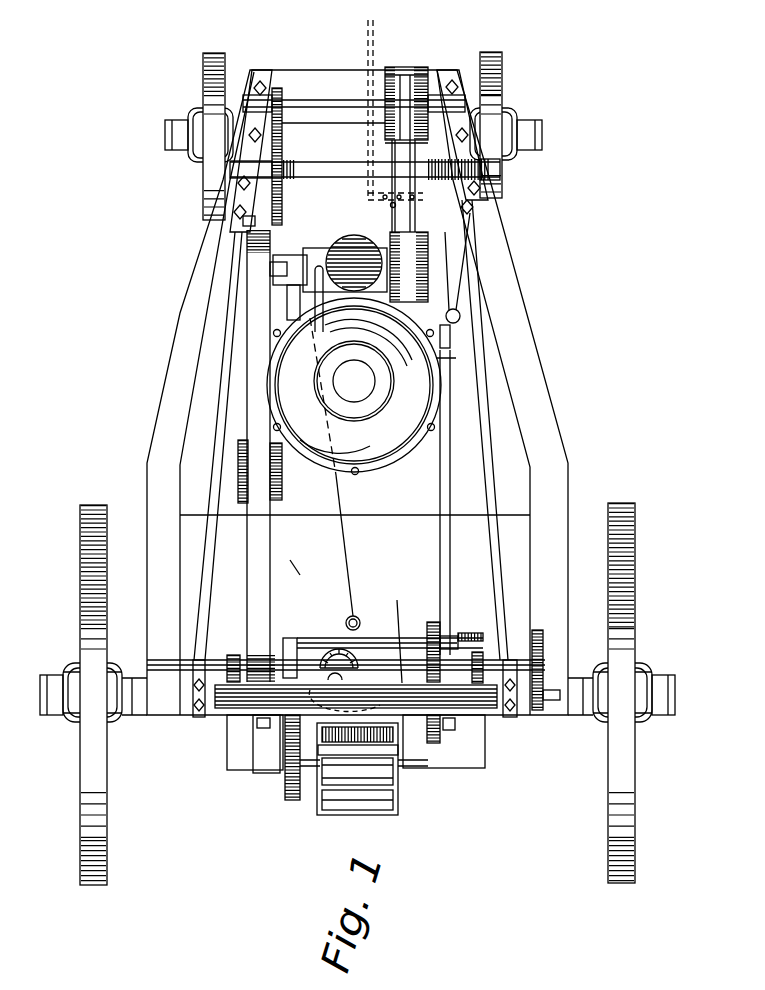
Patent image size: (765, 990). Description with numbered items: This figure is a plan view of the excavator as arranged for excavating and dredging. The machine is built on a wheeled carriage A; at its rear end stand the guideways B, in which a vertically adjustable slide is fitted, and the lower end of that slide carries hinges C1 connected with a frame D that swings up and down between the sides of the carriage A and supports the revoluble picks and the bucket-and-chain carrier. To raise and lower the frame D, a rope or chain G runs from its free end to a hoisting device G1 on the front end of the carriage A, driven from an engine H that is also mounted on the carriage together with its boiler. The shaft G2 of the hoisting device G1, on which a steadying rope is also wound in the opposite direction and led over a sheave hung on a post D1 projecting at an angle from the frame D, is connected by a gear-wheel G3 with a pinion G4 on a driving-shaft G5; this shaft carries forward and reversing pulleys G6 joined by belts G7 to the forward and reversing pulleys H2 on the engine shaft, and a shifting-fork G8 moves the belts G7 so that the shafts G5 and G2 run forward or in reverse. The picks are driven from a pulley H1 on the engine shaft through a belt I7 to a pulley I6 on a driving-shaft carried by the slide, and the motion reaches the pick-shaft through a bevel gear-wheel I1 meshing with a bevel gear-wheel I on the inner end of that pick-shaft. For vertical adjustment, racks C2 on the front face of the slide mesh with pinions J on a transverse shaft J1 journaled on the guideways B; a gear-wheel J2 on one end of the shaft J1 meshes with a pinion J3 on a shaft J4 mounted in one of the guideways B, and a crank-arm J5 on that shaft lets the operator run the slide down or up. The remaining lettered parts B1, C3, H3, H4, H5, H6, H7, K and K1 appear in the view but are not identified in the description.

The wheeled carriage A is at (149, 499).
The guideways B is at (197, 718).
The bracket B1 is at (252, 722).
The hinges C1 is at (462, 716).
The racks C2 is at (222, 716).
The axle housing C3 is at (492, 716).
The frame D is at (430, 768).
The post D1 is at (452, 452).
The rope or chain G is at (352, 198).
The hoisting device G1 is at (354, 125).
The shaft of the hoisting device G2 is at (334, 178).
The gear-wheel G3 is at (248, 216).
The pinion G4 is at (277, 88).
The driving-shaft G5 is at (334, 97).
The forward and reversing pulleys G6 is at (410, 67).
The belts G7 is at (392, 207).
The shifting-fork G8 is at (367, 52).
The engine H is at (368, 830).
The pulley H1 is at (247, 258).
The forward and reversing pulleys H2 is at (409, 267).
The motor H3 is at (340, 816).
The shaft H4 is at (400, 800).
The shaft H5 is at (304, 800).
The gear H6 is at (286, 775).
The gear H7 is at (420, 748).
The bevel gear-wheel I is at (472, 430).
The bevel gear-wheel I1 is at (456, 326).
The pulley I6 is at (211, 612).
The belt I7 is at (290, 560).
The pinions J is at (244, 655).
The shaft J1 is at (358, 620).
The gear-wheel J2 is at (524, 610).
The pinion J3 is at (543, 684).
The shaft J4 is at (308, 652).
The crank-arm J5 is at (326, 650).
The housing K is at (262, 735).
The bracket K1 is at (452, 735).